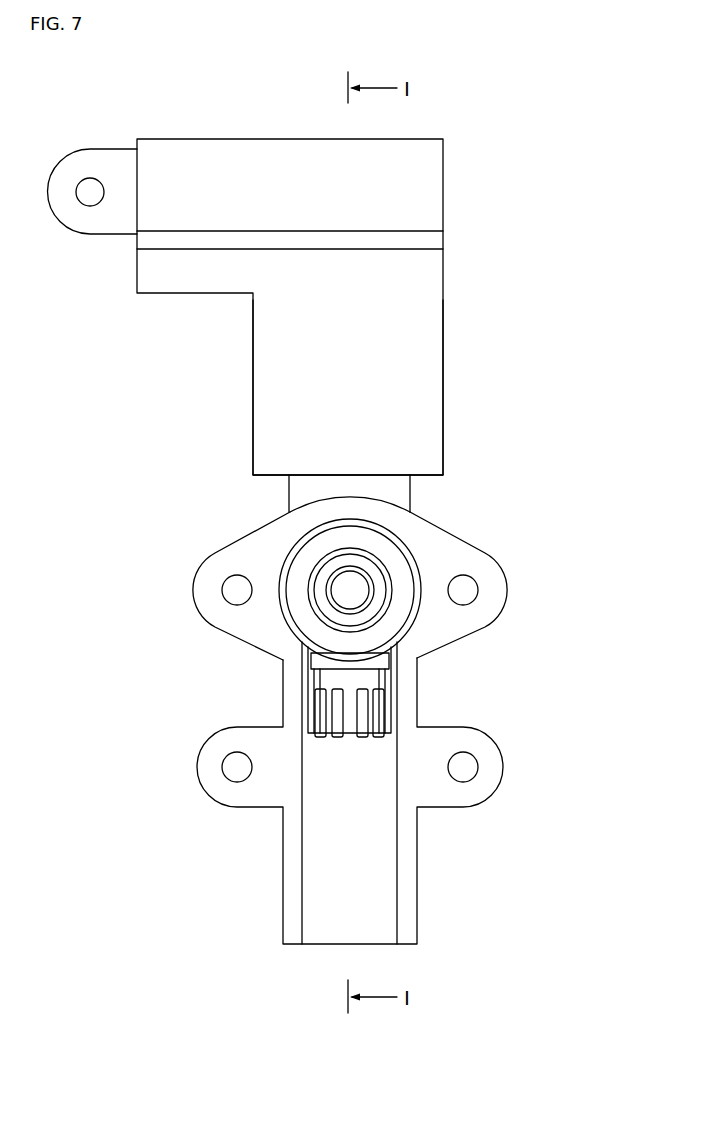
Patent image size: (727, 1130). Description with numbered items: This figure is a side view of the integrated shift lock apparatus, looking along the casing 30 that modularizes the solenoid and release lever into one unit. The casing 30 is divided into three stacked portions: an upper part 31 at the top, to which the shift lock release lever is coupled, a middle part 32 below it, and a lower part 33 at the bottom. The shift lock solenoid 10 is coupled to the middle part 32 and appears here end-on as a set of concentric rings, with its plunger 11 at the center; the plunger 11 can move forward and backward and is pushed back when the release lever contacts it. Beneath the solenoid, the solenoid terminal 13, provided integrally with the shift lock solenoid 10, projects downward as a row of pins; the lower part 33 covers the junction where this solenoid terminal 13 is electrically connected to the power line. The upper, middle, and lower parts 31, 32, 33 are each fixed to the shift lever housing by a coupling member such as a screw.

The casing 30 is at (467, 196).
The upper part 31 is at (409, 361).
The middle part 32 is at (450, 553).
The lower part 33 is at (332, 847).
The shift lock solenoid 10 is at (307, 620).
The plunger 11 is at (349, 589).
The solenoid terminal 13 is at (348, 713).